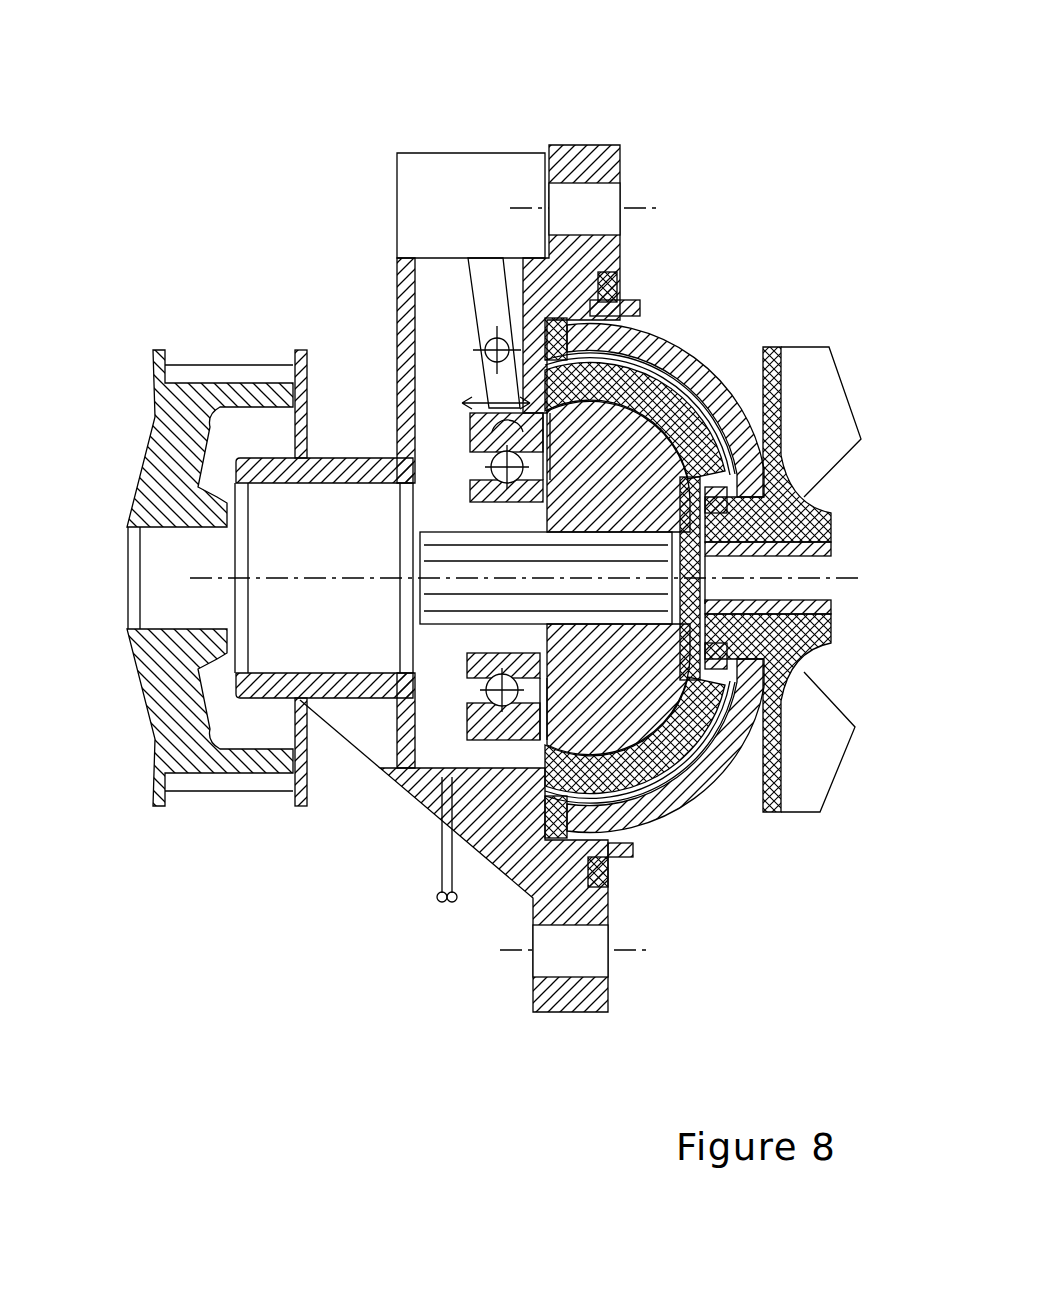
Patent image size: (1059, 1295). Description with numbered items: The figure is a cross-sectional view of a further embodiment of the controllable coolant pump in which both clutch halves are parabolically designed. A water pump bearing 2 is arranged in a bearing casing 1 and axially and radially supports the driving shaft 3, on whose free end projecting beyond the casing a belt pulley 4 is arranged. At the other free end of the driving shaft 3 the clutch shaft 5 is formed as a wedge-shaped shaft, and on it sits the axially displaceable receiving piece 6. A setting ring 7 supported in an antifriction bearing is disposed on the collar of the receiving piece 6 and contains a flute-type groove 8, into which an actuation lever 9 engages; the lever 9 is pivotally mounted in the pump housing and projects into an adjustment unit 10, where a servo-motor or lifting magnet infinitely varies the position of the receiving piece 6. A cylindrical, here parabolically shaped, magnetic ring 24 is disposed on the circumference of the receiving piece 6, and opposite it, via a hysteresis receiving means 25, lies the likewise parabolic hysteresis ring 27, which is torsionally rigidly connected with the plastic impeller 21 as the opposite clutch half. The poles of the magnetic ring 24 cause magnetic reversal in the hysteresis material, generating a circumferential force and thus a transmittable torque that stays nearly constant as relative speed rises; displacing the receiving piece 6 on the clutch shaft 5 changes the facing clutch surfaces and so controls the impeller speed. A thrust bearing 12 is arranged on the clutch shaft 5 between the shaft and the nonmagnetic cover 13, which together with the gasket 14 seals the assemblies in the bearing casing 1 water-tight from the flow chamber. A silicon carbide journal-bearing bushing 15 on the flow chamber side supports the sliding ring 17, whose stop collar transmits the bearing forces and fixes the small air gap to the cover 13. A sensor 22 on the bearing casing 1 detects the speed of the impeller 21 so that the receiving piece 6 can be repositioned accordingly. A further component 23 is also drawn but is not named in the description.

The bearing casing 1 is at (372, 470).
The water pump bearing 2 is at (300, 540).
The driving shaft 3 is at (131, 540).
The belt pulley 4 is at (192, 437).
The clutch shaft 5 is at (470, 600).
The receiving piece 6 is at (562, 727).
The setting ring 7 is at (487, 290).
The flute-type groove 8 is at (490, 745).
The actuation lever 9 is at (485, 285).
The adjustment unit 10 is at (487, 175).
The thrust bearing 12 is at (668, 368).
The cover 13 is at (727, 433).
The gasket 14 is at (613, 867).
The journal-bearing bushing 15 is at (765, 690).
The sliding ring 17 is at (798, 661).
The impeller 21 is at (785, 440).
The sensor 22 is at (500, 745).
The seal block 23 is at (558, 318).
The magnetic ring 24 is at (735, 355).
The hysteresis receiving means 25 is at (742, 358).
The hysteresis ring 27 is at (672, 362).